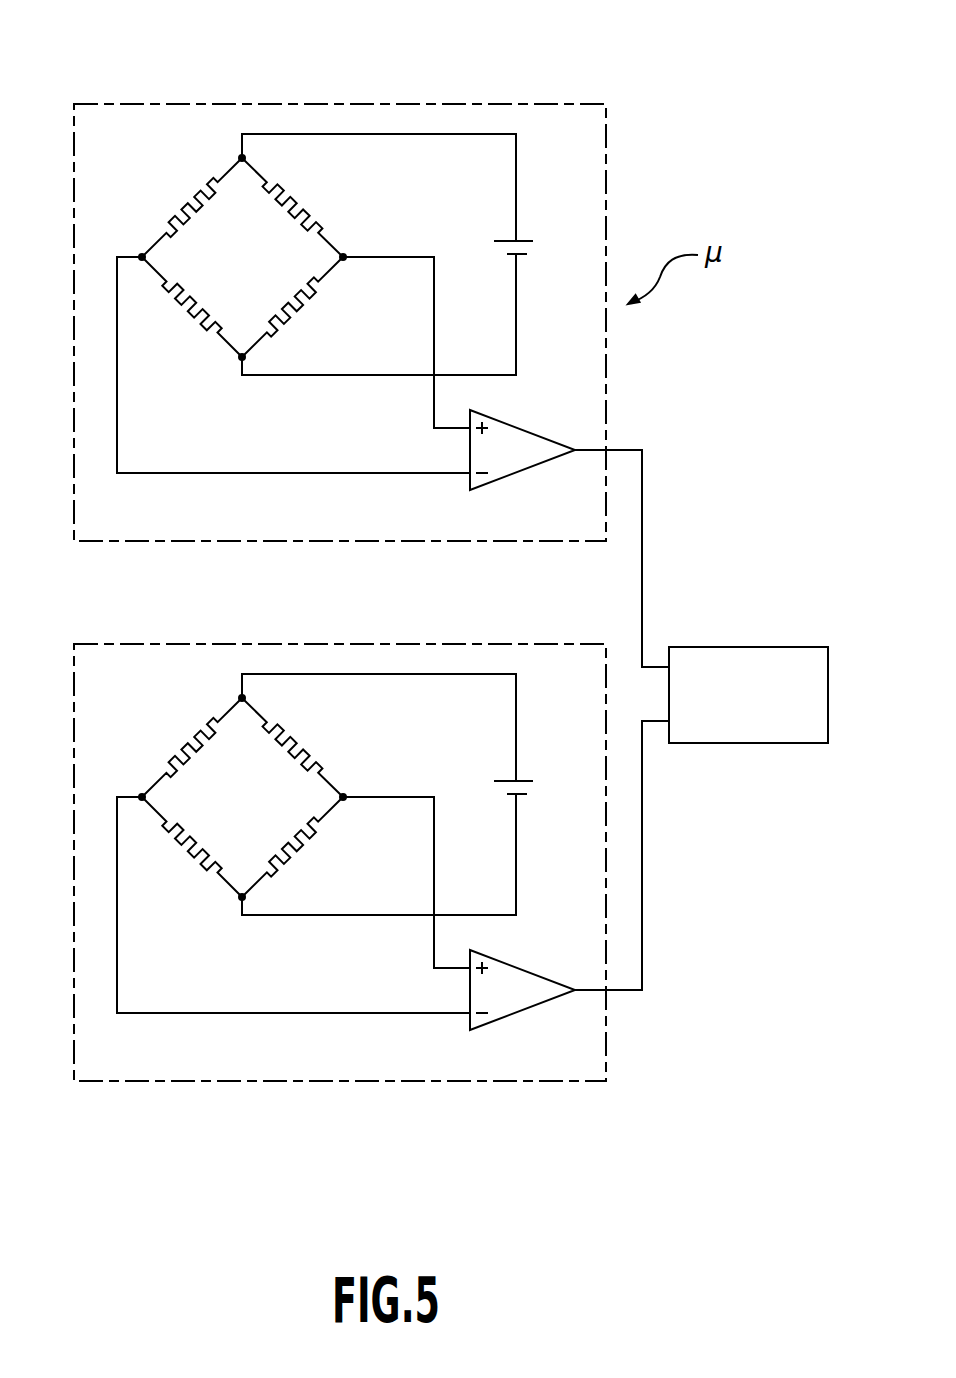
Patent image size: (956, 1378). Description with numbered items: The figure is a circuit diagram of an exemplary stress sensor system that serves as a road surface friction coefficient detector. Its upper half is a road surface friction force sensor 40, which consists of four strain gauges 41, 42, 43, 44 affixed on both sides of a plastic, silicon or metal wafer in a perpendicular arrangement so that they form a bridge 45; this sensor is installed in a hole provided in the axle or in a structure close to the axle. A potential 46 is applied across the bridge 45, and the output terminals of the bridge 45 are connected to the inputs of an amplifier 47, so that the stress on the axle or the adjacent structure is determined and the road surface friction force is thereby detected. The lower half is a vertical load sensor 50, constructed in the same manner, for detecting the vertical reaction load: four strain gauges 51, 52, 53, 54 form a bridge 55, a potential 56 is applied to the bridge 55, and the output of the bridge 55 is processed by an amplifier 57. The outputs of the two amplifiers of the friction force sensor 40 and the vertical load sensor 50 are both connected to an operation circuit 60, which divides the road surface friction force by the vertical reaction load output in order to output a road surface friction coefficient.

The road surface friction force sensor 40 is at (495, 105).
The strain gauge 41 is at (203, 200).
The strain gauge 42 is at (213, 325).
The strain gauge 43 is at (297, 298).
The strain gauge 44 is at (297, 205).
The bridge 45 is at (222, 360).
The potential 46 is at (525, 240).
The amplifier 47 is at (523, 428).
The vertical load sensor 50 is at (340, 900).
The strain gauge 51 is at (183, 726).
The strain gauge 52 is at (186, 882).
The strain gauge 53 is at (328, 847).
The strain gauge 54 is at (324, 747).
The bridge 55 is at (206, 952).
The potential 56 is at (545, 743).
The amplifier 57 is at (527, 964).
The operation circuit 60 is at (753, 744).